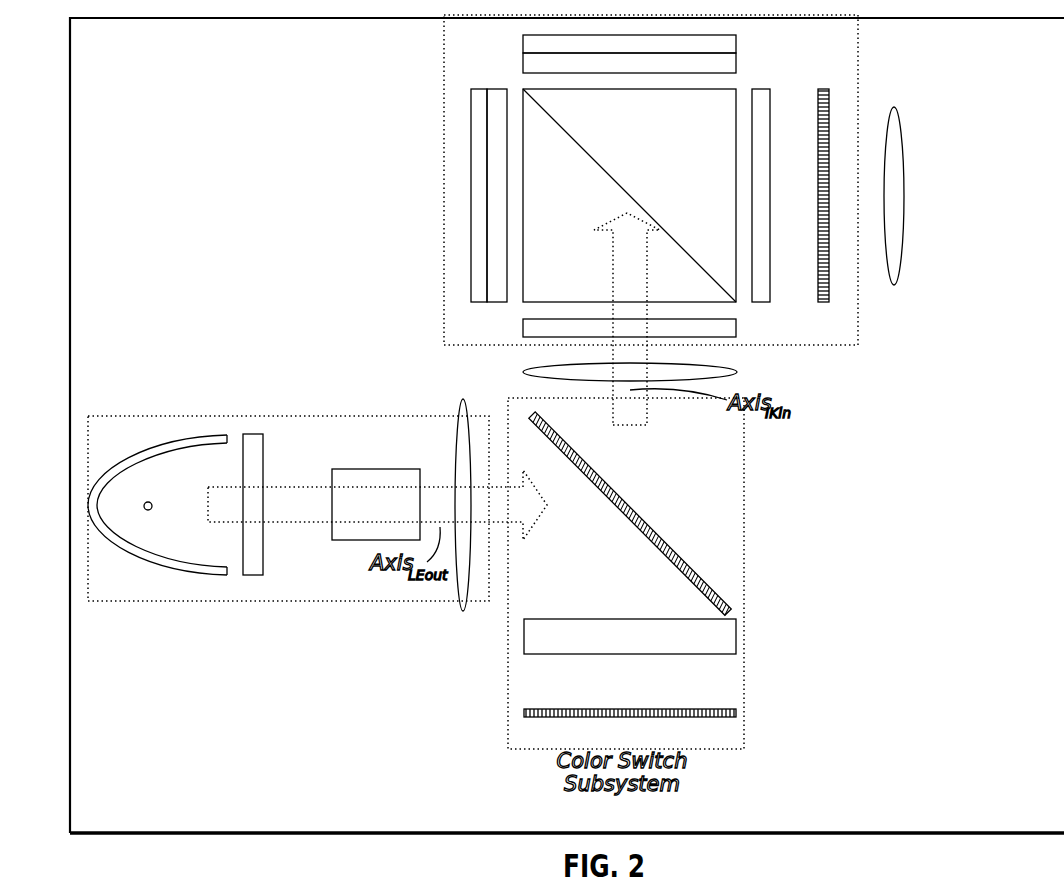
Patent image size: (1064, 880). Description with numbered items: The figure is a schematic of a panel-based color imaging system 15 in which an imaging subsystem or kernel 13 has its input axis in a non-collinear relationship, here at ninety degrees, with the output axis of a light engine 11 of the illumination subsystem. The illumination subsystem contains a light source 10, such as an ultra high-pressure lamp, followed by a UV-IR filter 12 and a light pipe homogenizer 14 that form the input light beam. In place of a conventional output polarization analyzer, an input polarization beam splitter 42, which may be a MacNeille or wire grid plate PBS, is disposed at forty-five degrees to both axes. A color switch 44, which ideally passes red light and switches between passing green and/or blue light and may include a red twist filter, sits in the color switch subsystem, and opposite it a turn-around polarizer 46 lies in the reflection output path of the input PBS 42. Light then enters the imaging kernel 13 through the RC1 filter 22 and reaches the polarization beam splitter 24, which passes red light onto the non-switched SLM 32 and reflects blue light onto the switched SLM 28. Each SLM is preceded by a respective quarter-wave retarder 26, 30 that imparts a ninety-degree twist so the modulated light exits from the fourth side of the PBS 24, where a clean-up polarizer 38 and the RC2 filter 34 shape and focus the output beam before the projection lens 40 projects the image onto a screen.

The light source 10 is at (175, 441).
The light engine 11 is at (291, 652).
The UV-IR filter 12 is at (253, 434).
The imaging subsystem or kernel 13 is at (353, 180).
The light pipe homogenizer 14 is at (380, 469).
The panel-based color imaging system 15 is at (422, 835).
The RC1 filter 22 is at (523, 336).
The polarization beam splitter 24 is at (721, 117).
The quarter-wave retarder 26 is at (501, 89).
The first spatial light modulator 28 is at (471, 192).
The quarter-wave retarder 30 is at (736, 62).
The second spatial light modulator 32 is at (736, 40).
The RC2 filter 34 is at (762, 302).
The clean-up polarizer 38 is at (823, 302).
The projection lens 40 is at (895, 107).
The input polarization beam splitter 42 is at (532, 415).
The color switch 44 is at (736, 636).
The turn-around polarizer 46 is at (736, 713).